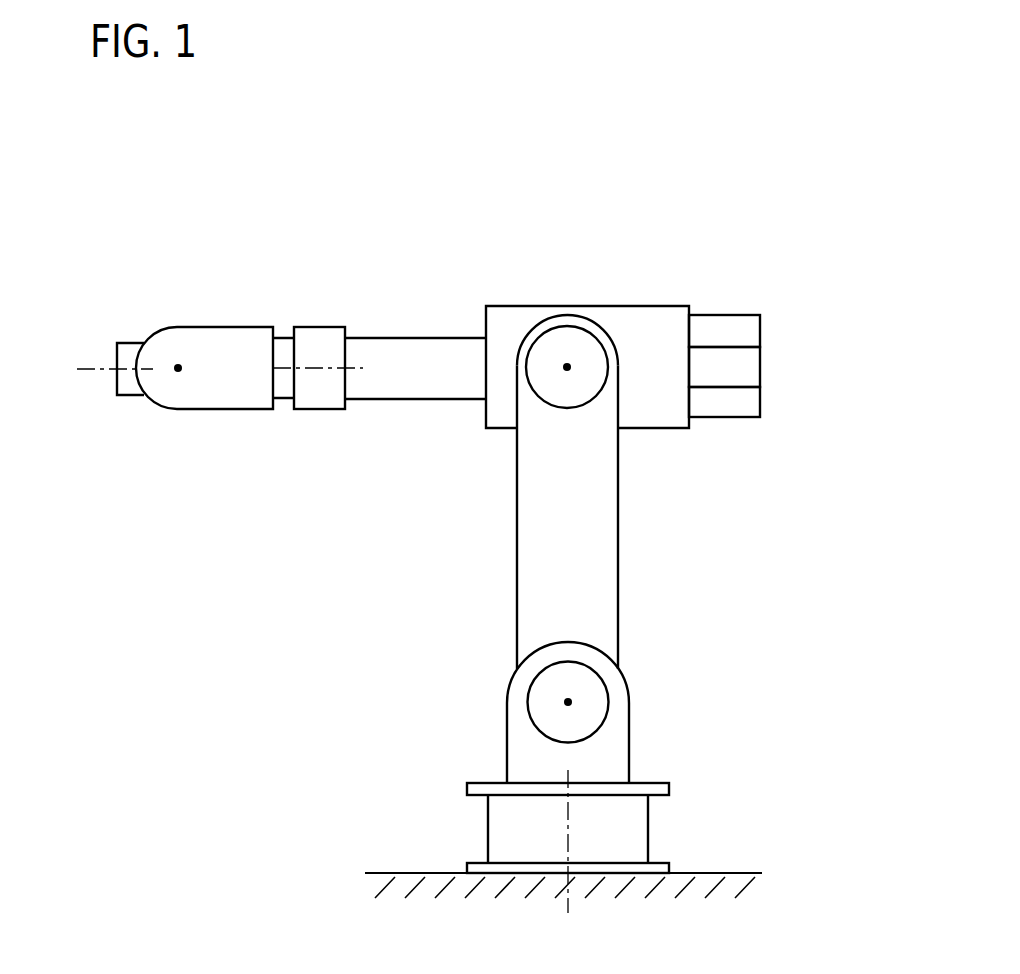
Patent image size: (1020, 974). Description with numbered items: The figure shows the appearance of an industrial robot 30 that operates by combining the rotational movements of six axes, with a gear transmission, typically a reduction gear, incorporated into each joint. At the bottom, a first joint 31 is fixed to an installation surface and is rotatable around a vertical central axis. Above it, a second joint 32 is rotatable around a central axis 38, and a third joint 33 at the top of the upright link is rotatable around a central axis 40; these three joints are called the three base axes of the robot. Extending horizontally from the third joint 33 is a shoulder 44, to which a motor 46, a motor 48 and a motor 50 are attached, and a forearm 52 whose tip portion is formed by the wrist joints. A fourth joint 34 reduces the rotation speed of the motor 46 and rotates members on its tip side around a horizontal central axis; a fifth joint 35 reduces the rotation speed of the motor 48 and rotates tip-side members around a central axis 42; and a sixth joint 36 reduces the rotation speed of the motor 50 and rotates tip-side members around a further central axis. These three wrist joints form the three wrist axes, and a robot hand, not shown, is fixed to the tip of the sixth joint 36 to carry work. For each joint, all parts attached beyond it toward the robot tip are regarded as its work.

The industrial robot 30 is at (615, 232).
The first joint 31 is at (632, 831).
The second joint 32 is at (589, 688).
The third joint 33 is at (560, 350).
The fourth joint 34 is at (330, 343).
The fifth joint 35 is at (207, 343).
The sixth joint 36 is at (131, 355).
The central axis 38 is at (568, 703).
The central axis 40 is at (567, 368).
The central axis 42 is at (178, 372).
The shoulder 44 is at (662, 348).
The motor 46 is at (740, 333).
The motor 48 is at (740, 402).
The motor 50 is at (740, 362).
The forearm 52 is at (443, 352).